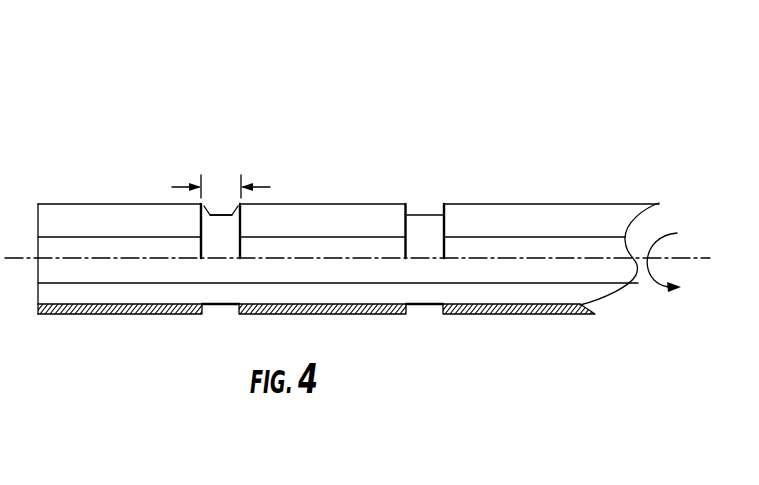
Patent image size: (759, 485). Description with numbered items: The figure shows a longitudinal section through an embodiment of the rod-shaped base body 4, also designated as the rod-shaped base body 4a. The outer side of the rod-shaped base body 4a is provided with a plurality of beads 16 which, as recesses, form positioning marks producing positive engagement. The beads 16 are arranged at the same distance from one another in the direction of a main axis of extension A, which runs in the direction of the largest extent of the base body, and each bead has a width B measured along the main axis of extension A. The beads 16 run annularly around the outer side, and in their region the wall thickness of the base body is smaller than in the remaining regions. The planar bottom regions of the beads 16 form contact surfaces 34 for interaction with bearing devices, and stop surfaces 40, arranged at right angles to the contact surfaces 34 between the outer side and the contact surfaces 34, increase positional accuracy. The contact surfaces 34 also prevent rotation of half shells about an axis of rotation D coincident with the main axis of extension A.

The rod-shaped base body 4 is at (518, 93).
The rod-shaped base body 4a is at (512, 203).
The beads 16 is at (192, 197).
The contact surfaces 34 is at (240, 204).
The stop surfaces 40 is at (437, 205).
The width B is at (221, 176).
The main axis of extension A is at (718, 261).
The axis of rotation D is at (664, 279).